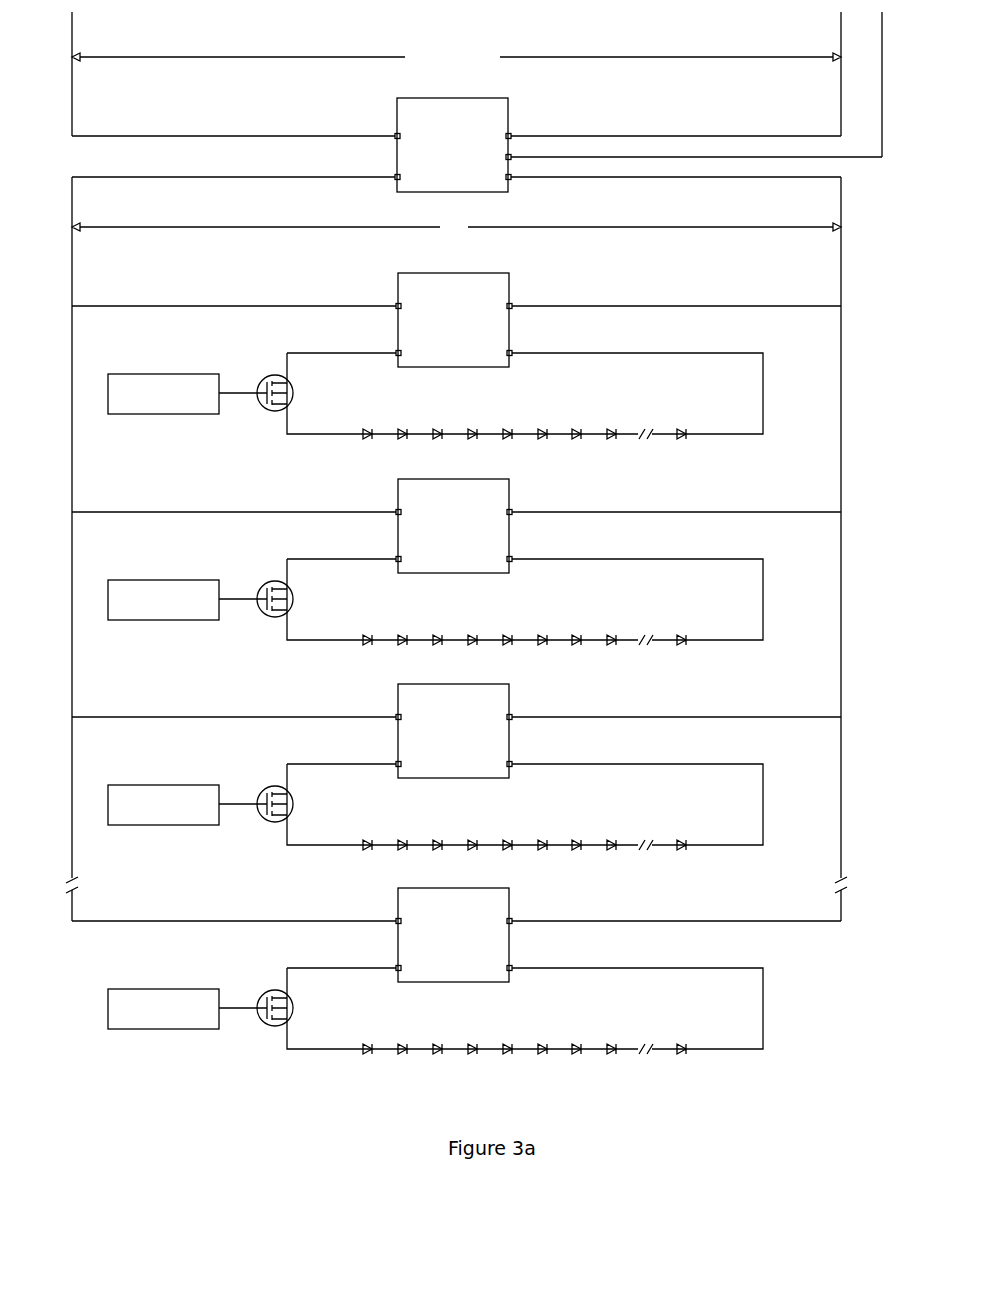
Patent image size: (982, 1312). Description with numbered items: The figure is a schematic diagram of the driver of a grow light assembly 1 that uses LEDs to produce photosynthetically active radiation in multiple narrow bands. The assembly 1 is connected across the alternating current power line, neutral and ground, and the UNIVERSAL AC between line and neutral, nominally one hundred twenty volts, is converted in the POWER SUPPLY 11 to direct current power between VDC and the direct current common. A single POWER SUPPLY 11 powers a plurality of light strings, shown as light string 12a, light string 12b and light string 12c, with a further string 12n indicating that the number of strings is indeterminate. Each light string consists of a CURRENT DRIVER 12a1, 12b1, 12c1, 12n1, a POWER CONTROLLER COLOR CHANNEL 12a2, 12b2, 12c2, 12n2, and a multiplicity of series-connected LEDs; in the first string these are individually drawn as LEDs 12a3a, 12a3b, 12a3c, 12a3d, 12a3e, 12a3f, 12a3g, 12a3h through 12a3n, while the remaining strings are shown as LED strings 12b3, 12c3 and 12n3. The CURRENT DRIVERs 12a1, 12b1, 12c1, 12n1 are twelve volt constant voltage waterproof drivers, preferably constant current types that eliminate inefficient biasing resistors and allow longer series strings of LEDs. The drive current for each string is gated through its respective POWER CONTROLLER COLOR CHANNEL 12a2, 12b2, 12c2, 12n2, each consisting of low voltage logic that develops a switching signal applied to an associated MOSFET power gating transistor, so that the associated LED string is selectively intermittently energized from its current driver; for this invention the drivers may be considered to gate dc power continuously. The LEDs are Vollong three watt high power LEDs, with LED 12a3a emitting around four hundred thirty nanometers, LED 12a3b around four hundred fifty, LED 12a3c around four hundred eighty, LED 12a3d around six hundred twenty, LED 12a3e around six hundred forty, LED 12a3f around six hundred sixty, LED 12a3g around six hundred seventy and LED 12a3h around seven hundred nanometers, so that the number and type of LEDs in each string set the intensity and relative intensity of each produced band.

The grow light assembly 1 is at (70, 186).
The power supply 11 is at (508, 106).
The light string 12a is at (490, 368).
The current driver 12a1 is at (509, 280).
The power controller color channel 12a2 is at (275, 375).
The LED 12a3a is at (368, 428).
The LED 12a3b is at (403, 428).
The LED 12a3c is at (438, 440).
The LED 12a3d is at (473, 428).
The LED 12a3e is at (508, 428).
The LED 12a3f is at (543, 440).
The LED 12a3g is at (577, 428).
The LED 12a3h is at (612, 428).
The LED 12a3n is at (682, 440).
The light string 12b is at (490, 573).
The current driver 12b1 is at (509, 486).
The power controller color channel 12b2 is at (275, 581).
The LED string 12b3 is at (691, 633).
The light string 12c is at (490, 778).
The current driver 12c1 is at (509, 691).
The power controller color channel 12c2 is at (275, 786).
The LED string 12c3 is at (691, 838).
The color channel n 12n is at (490, 984).
The current driver of channel n 12n1 is at (509, 895).
The PWM controller and switching transistor of channel n 12n2 is at (275, 990).
The LED string of channel n 12n3 is at (691, 1042).